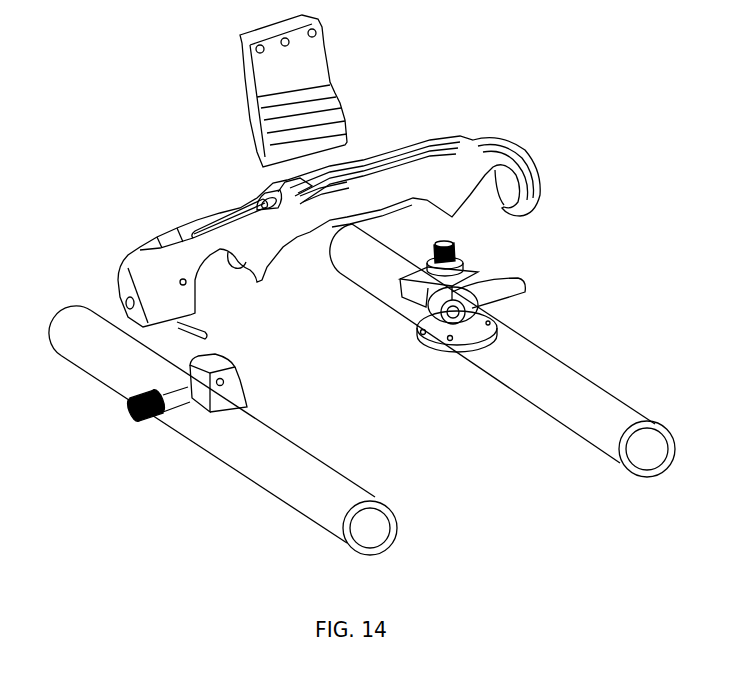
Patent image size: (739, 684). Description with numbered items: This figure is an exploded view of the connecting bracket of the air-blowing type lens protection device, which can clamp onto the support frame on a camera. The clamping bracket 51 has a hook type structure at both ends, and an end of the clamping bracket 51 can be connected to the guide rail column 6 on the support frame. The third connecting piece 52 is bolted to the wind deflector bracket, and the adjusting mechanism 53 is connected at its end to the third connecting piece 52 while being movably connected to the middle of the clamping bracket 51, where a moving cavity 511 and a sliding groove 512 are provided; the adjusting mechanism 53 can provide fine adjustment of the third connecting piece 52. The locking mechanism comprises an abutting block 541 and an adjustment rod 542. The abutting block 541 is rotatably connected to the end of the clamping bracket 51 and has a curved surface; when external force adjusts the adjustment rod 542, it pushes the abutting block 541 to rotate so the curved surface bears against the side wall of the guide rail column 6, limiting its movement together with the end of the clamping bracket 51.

The clamping bracket 51 is at (440, 185).
The moving cavity 511 is at (358, 160).
The sliding groove 512 is at (294, 194).
The third connecting piece 52 is at (283, 101).
The adjusting mechanism 53 is at (458, 303).
The abutting block 541 is at (220, 398).
The adjustment rod 542 is at (128, 415).
The guide rail column 6 is at (503, 362).